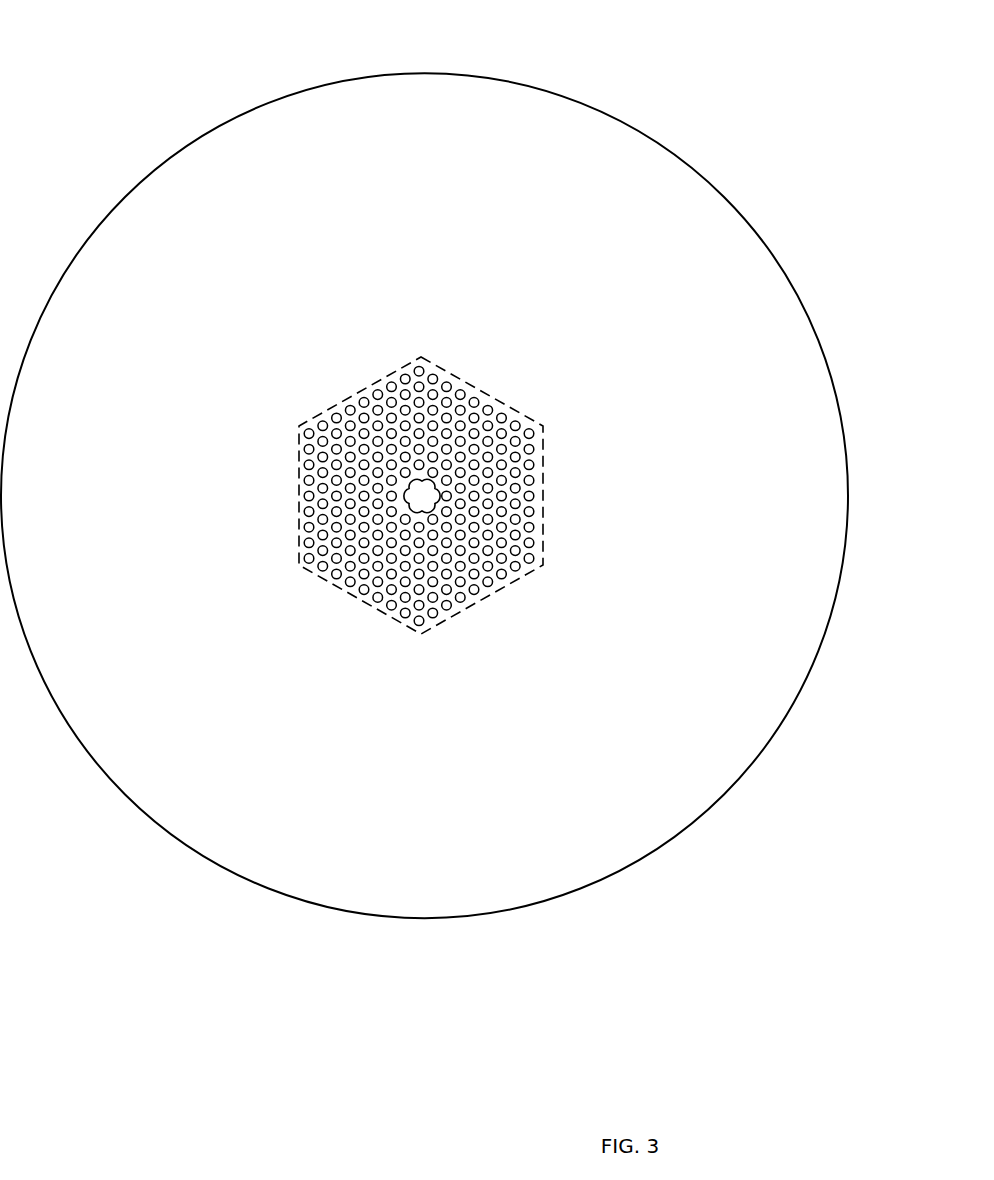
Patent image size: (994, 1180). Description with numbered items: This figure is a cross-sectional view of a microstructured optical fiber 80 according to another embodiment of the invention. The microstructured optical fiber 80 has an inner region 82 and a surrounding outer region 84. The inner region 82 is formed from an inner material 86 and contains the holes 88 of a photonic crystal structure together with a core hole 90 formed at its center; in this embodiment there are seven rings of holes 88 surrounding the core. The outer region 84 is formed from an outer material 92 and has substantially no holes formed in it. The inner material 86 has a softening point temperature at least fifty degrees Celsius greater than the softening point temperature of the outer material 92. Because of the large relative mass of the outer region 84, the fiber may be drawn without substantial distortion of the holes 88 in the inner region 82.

The microstructured optical fiber 80 is at (131, 107).
The inner region 82 is at (362, 600).
The outer region 84 is at (420, 73).
The inner material 86 is at (303, 493).
The holes 88 is at (447, 383).
The core hole 90 is at (428, 493).
The outer material 92 is at (558, 235).